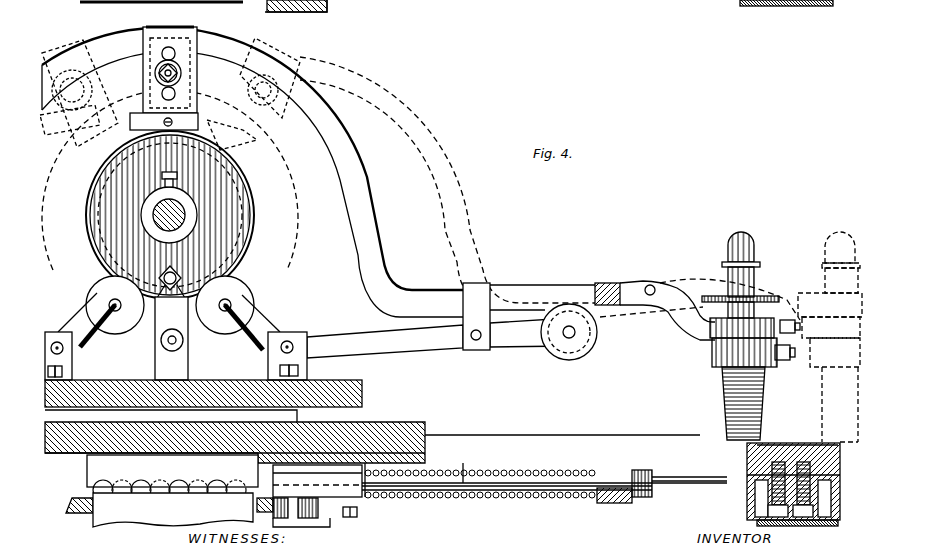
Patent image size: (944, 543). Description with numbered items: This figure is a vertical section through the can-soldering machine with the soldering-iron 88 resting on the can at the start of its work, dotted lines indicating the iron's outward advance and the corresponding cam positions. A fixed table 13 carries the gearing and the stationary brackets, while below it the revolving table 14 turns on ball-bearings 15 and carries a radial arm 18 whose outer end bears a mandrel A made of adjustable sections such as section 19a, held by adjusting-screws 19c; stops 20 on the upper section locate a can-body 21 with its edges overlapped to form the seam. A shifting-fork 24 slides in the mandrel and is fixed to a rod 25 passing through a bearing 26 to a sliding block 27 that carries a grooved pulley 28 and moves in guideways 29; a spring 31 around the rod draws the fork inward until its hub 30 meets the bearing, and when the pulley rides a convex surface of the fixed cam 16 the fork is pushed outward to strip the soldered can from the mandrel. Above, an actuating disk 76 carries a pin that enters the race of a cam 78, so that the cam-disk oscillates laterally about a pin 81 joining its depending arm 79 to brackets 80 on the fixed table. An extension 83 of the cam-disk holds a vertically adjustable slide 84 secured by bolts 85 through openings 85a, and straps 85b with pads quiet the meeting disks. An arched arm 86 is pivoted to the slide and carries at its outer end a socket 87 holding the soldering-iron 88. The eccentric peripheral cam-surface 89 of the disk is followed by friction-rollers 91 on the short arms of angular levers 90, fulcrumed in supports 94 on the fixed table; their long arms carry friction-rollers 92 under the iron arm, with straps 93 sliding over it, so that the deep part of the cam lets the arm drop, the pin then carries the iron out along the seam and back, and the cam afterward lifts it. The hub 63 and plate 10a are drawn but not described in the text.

The fixed table 13 is at (362, 382).
The revolving table 14 is at (407, 403).
The ball-bearings 15 is at (213, 483).
The fixed cam 16 is at (258, 2).
The arm 18 is at (578, 435).
The mandrel section 19a is at (792, 520).
The adjusting-screws 19c is at (775, 3).
The stops 20 is at (290, 520).
The can-body 21 is at (833, 528).
The shifting-fork 24 is at (707, 480).
The rod 25 is at (518, 517).
The bearing 26 is at (615, 510).
The sliding block 27 is at (317, 481).
The pulley 28 is at (313, 4).
The guideways 29 is at (443, 468).
The hub 30 is at (647, 497).
The spring 31 is at (440, 497).
The hub 63 is at (158, 207).
The disk 76 is at (93, 210).
The cam 78 is at (253, 208).
The arm 79 is at (171, 293).
The brackets 80 is at (187, 363).
The pin 81 is at (167, 342).
The extension 83 is at (187, 98).
The slide 84 is at (193, 27).
The bolts 85 is at (180, 73).
The openings 85a is at (163, 55).
The straps 85b is at (132, 117).
The arm 86 is at (378, 195).
The socket 87 is at (670, 292).
The soldering-iron 88 is at (722, 392).
The peripheral cam-surface 89 is at (245, 245).
The angular levers 90 is at (80, 350).
The friction-rollers 91 is at (87, 298).
The friction-rollers 92 is at (593, 338).
The straps 93 is at (480, 303).
The supports 94 is at (73, 378).
The plate 10a is at (807, 443).
The mandrel A is at (840, 470).